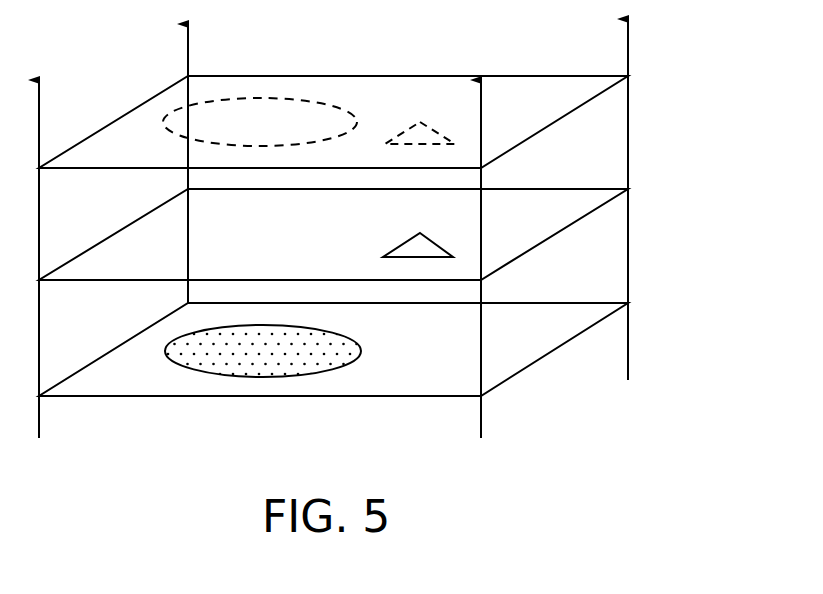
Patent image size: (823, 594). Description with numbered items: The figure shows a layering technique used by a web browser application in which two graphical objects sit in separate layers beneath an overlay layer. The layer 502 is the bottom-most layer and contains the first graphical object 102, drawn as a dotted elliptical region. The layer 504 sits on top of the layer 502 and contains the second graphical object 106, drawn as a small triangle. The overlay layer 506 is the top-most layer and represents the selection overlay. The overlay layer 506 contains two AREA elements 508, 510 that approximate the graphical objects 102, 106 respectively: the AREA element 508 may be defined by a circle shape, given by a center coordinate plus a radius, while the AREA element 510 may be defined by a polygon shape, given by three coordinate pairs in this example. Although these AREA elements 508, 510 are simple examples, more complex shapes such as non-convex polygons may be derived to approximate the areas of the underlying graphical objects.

The layer 502 is at (507, 370).
The layer 504 is at (555, 210).
The overlay layer 506 is at (580, 97).
The AREA element 508 is at (262, 100).
The AREA element 510 is at (432, 123).
The second graphical object 106 is at (453, 257).
The first graphical object 102 is at (338, 350).